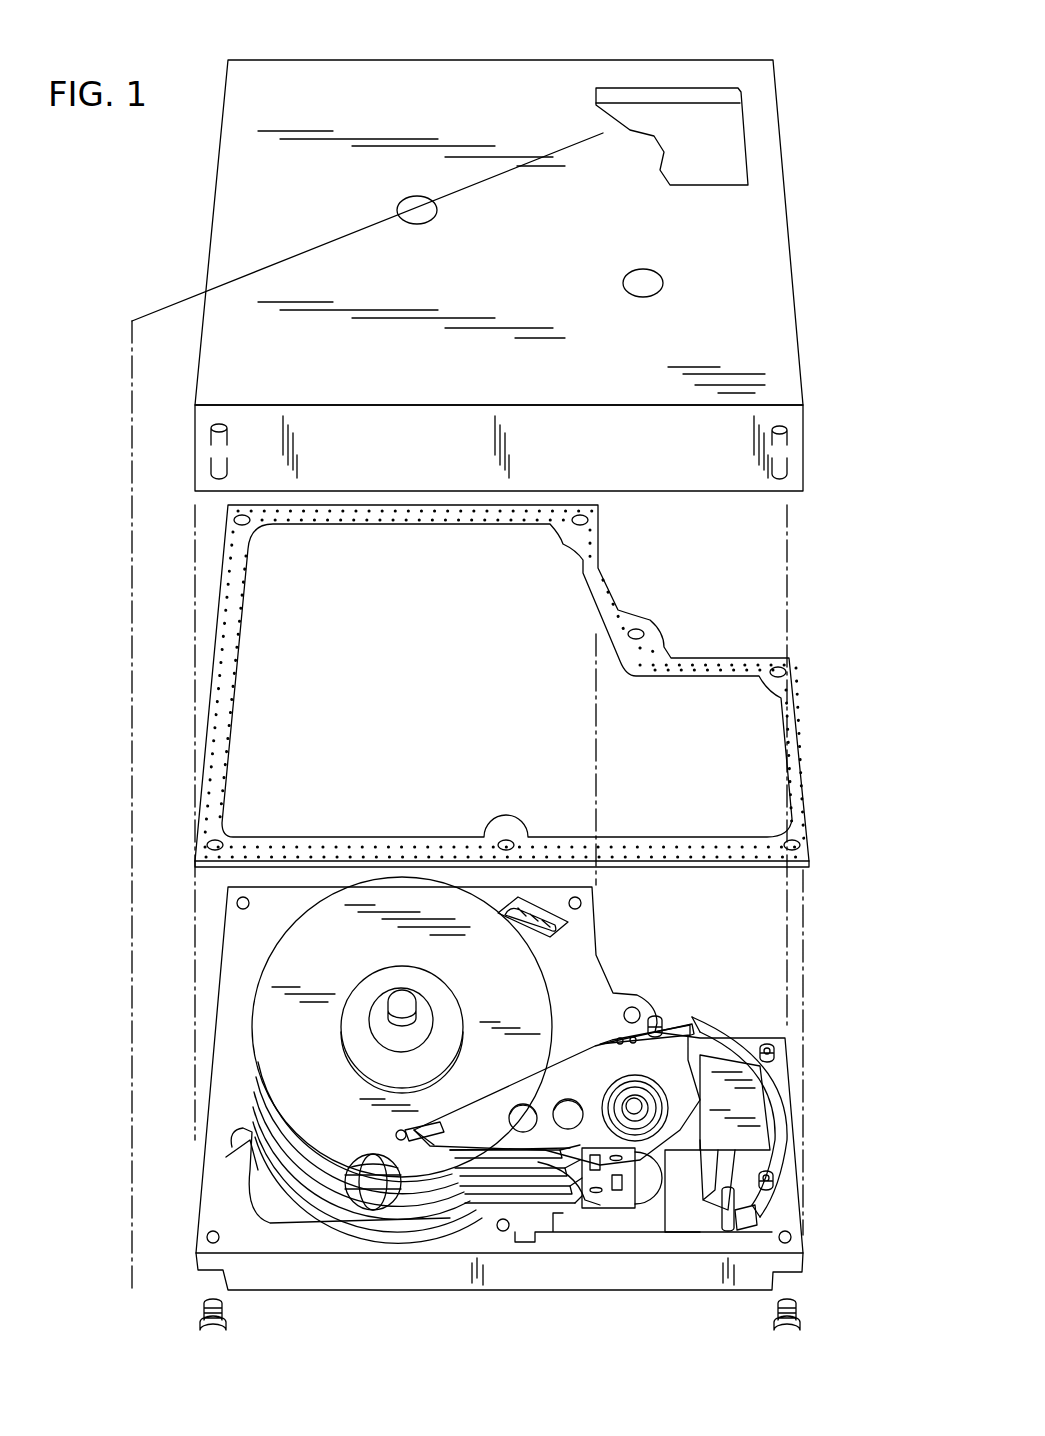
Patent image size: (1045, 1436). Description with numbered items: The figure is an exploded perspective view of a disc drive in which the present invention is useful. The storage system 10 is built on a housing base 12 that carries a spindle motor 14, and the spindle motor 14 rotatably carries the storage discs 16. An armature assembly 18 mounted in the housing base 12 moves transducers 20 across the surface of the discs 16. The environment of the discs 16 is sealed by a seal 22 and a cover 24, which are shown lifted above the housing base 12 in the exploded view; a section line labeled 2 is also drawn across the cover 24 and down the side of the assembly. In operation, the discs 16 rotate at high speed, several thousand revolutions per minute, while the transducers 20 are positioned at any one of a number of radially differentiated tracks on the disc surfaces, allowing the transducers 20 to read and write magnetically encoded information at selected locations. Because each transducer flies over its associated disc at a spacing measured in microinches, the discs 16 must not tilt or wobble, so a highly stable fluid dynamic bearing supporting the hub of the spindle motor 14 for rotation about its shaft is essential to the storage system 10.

The section line 2- 2 is at (585, 140).
The storage system 10 is at (780, 59).
The housing base 12 is at (803, 1245).
The spindle motor 14 is at (378, 1032).
The storage discs 16 is at (394, 1166).
The armature assembly 18 is at (544, 1214).
The transducers 20 is at (411, 1126).
The seal 22 is at (803, 815).
The cover 24 is at (793, 260).